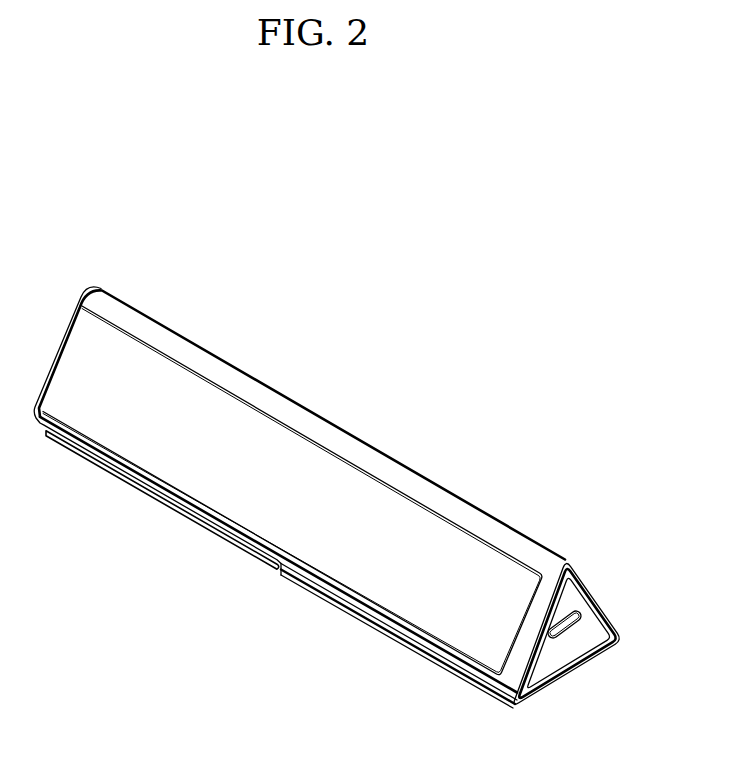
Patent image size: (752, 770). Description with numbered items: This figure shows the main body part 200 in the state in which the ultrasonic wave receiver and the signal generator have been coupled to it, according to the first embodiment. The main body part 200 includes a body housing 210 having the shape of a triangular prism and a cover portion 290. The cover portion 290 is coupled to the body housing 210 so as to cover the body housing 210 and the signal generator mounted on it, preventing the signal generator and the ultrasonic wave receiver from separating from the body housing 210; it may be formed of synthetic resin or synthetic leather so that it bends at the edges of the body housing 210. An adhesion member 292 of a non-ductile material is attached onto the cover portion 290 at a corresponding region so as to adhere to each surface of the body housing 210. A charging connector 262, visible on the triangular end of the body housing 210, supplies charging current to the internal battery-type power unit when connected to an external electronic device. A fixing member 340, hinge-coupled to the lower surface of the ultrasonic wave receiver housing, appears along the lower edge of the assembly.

The main body part 200 is at (345, 523).
The body housing 210 is at (565, 652).
The charging connector 262 is at (583, 618).
The cover portion 290 is at (440, 503).
The adhesion member 292 is at (377, 510).
The fixing member 340 is at (197, 527).